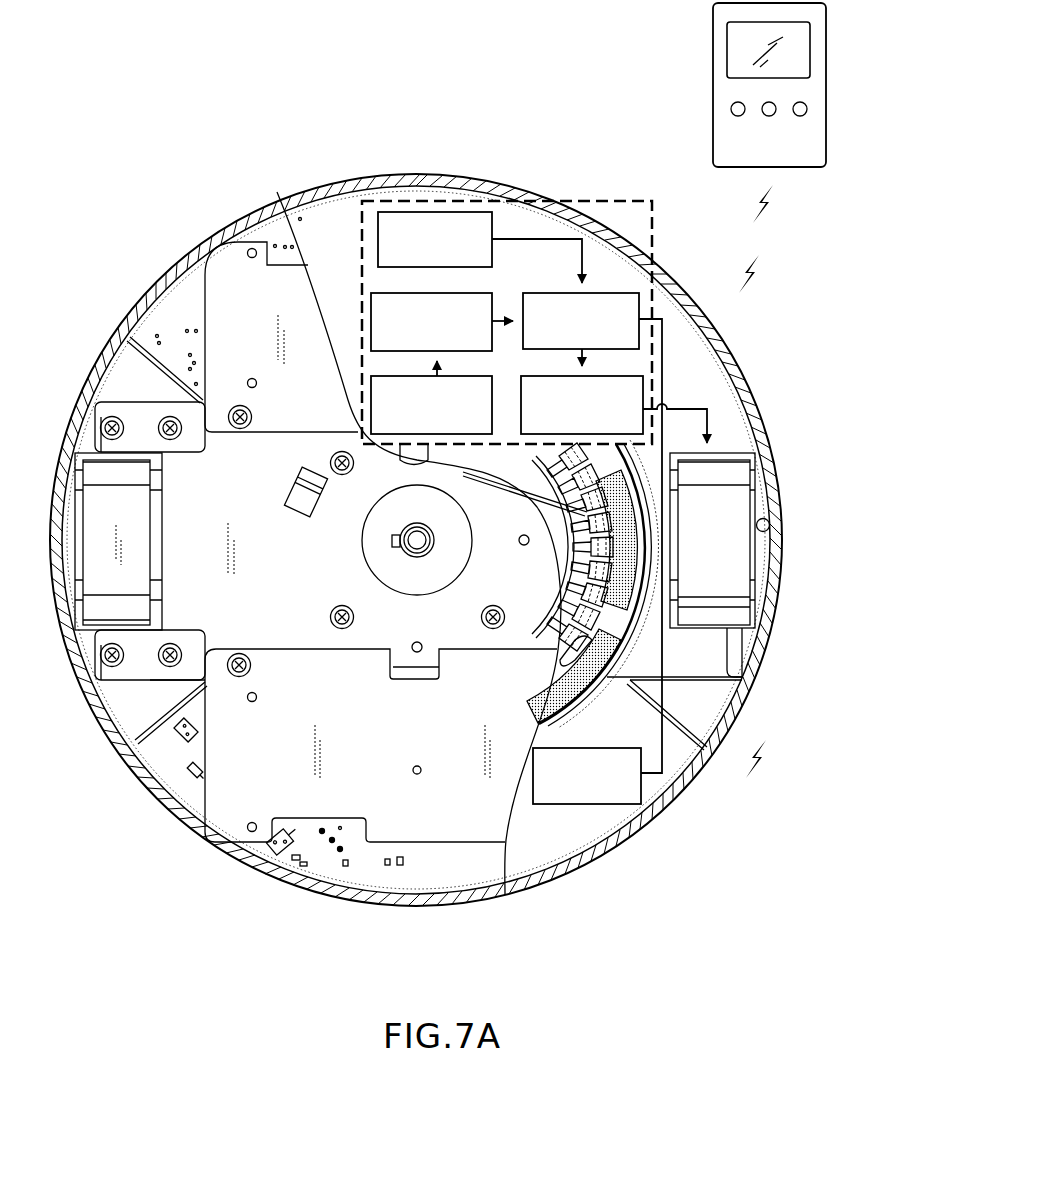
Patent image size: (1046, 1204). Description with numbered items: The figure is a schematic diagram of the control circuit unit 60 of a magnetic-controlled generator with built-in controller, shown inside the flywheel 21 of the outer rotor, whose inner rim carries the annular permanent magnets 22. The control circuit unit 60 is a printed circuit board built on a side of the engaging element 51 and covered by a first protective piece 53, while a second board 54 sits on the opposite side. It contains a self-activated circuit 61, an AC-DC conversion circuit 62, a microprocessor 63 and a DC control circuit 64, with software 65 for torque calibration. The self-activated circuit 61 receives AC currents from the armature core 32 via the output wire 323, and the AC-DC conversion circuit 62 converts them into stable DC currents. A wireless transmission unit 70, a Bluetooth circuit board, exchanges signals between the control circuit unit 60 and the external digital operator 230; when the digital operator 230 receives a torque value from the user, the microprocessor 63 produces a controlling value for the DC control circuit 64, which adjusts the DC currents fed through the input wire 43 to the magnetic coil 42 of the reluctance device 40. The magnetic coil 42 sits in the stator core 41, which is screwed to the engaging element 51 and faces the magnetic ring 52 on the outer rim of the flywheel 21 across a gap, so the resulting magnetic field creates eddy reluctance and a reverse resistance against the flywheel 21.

The flywheel 21 is at (732, 710).
The permanent magnets 22 is at (600, 652).
The armature core 32 is at (612, 608).
The output wire 323 is at (560, 543).
The reluctance device 40 is at (740, 595).
The stator core 41 is at (760, 508).
The magnetic coil 42 is at (737, 498).
The input wire 43 is at (707, 423).
The engaging element 51 is at (183, 623).
The magnetic ring 52 is at (757, 523).
The first protective piece 53 is at (227, 297).
The circuit board 54 is at (230, 802).
The control circuit unit 60 is at (529, 285).
The self-activated circuit 61 is at (385, 380).
The AC-DC conversion circuit 62 is at (482, 303).
The microprocessor 63 is at (623, 302).
The DC control circuit 64 is at (627, 387).
The software 65 is at (413, 219).
The wireless transmission unit 70 is at (630, 793).
The digital operator 230 is at (802, 106).